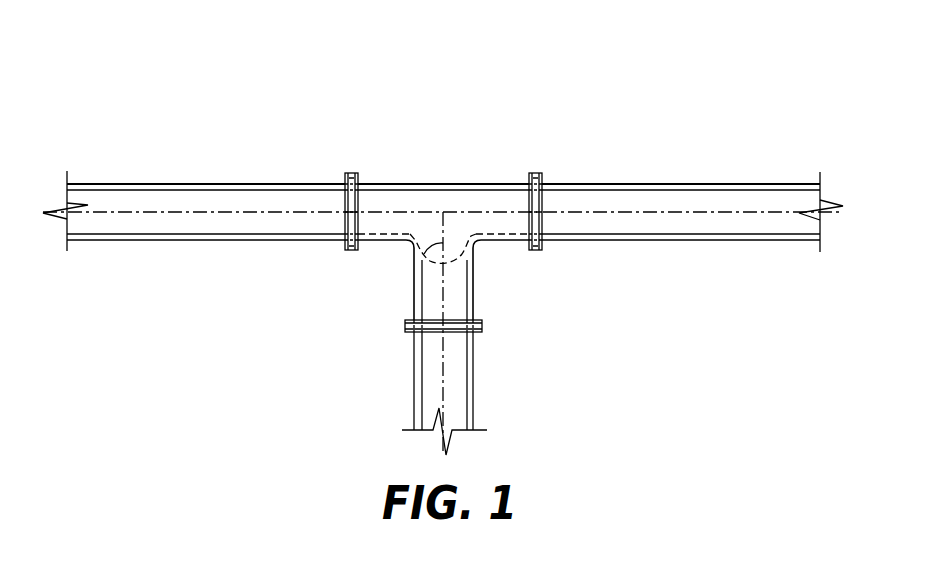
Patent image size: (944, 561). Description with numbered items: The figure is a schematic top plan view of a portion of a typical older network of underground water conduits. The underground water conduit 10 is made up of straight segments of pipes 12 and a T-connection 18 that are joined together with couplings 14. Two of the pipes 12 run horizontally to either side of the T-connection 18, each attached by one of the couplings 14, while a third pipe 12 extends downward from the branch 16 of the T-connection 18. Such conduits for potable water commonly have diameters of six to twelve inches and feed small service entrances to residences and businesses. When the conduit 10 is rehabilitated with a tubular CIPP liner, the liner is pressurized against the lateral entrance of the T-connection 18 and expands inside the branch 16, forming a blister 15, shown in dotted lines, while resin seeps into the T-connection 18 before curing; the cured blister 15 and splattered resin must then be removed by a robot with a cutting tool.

The underground water conduit 10 is at (263, 160).
The pipes 12 is at (111, 192).
The couplings 14 is at (352, 173).
The blister 15 is at (428, 251).
The branch 16 is at (462, 289).
The T-connection 18 is at (440, 190).